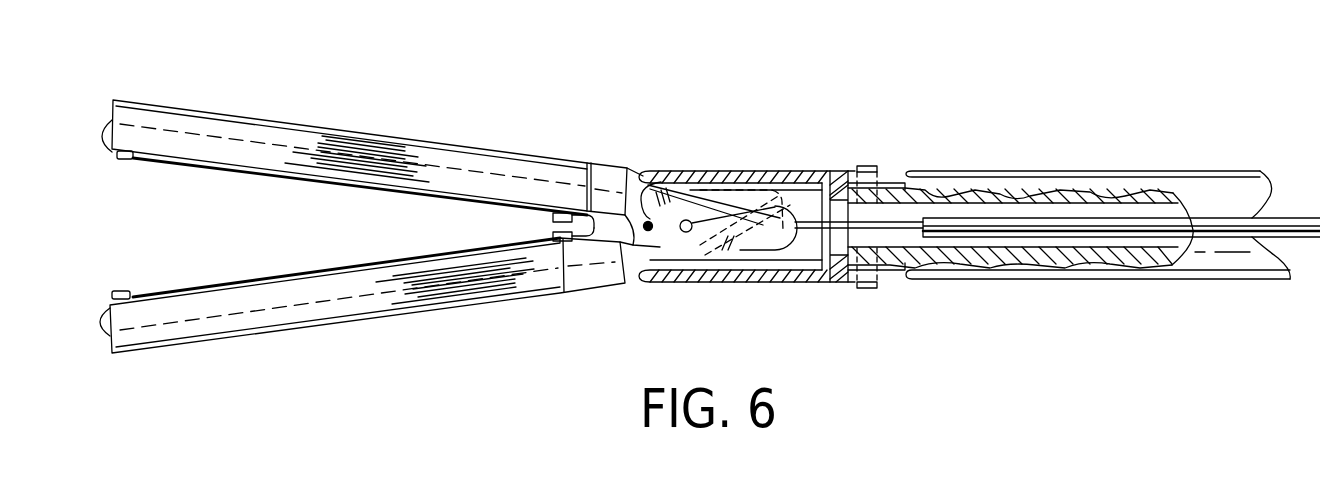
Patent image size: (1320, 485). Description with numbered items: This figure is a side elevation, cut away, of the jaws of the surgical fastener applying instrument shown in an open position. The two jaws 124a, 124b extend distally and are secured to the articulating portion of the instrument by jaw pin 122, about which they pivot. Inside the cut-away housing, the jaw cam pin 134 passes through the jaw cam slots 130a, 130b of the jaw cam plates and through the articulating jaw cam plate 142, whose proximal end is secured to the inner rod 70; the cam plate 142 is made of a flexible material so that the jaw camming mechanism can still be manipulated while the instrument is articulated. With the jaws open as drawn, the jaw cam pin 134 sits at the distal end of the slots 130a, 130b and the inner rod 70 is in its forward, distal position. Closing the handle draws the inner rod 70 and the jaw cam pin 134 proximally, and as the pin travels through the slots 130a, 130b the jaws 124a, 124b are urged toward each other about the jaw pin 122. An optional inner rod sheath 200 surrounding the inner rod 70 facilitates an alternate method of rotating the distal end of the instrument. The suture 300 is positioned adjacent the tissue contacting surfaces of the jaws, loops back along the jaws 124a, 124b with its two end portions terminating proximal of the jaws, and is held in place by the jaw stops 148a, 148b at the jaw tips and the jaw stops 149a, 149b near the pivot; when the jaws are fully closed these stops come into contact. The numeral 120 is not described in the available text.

The inner rod 70 is at (1073, 218).
The housing 120 is at (872, 166).
The jaw pin 122 is at (652, 173).
The jaw 124a is at (185, 348).
The jaw 124b is at (190, 110).
The jaw cam slot 130a is at (767, 250).
The jaw cam slot 130b is at (766, 187).
The jaw cam pin 134 is at (688, 238).
The articulating jaw cam plate 142 is at (875, 288).
The jaw stop 148a is at (122, 160).
The jaw stop 148b is at (118, 292).
The jaw stop 149a is at (560, 213).
The jaw stop 149b is at (565, 243).
The inner rod sheath 200 is at (1073, 268).
The suture 300 is at (435, 165).